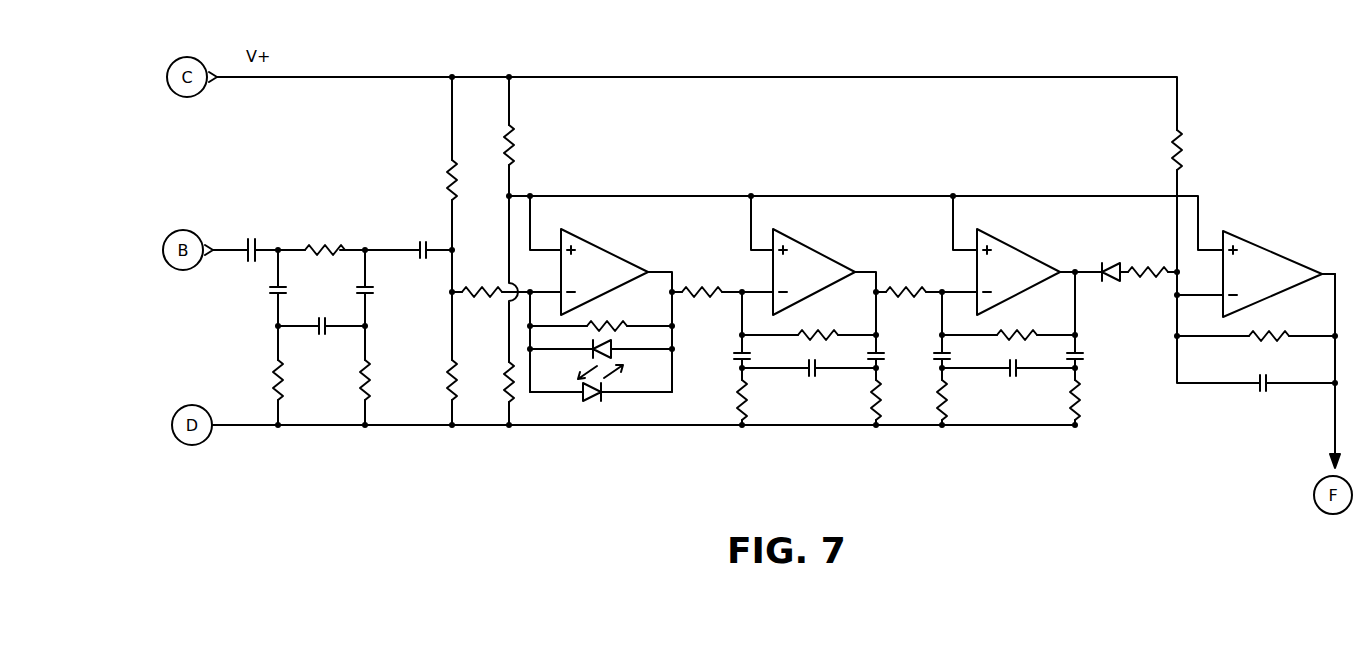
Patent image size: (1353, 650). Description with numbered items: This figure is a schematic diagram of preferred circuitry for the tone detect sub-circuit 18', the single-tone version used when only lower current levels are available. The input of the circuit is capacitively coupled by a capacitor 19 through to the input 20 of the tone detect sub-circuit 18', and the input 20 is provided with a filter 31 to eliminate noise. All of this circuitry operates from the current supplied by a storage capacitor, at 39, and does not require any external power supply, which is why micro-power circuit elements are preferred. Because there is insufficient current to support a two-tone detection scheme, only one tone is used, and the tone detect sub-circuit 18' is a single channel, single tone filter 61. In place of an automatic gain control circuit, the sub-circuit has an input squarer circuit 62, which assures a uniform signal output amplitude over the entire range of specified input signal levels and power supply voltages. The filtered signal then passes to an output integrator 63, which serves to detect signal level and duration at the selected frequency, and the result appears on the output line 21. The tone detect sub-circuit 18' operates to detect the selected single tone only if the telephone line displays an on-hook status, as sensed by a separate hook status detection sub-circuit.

The tone detect sub-circuit 18' is at (866, 191).
The capacitor 19 is at (257, 246).
The input 20 is at (340, 77).
The output line 21 is at (1334, 437).
The 60 Hz filter 31 is at (357, 240).
The current supply point 39 is at (433, 77).
The single tone filter 61 is at (913, 456).
The input squarer circuit 62 is at (678, 242).
The output integrator 63 is at (1262, 256).